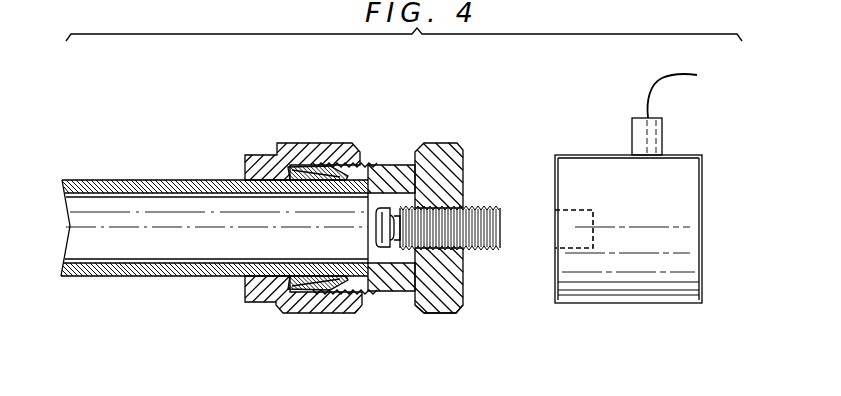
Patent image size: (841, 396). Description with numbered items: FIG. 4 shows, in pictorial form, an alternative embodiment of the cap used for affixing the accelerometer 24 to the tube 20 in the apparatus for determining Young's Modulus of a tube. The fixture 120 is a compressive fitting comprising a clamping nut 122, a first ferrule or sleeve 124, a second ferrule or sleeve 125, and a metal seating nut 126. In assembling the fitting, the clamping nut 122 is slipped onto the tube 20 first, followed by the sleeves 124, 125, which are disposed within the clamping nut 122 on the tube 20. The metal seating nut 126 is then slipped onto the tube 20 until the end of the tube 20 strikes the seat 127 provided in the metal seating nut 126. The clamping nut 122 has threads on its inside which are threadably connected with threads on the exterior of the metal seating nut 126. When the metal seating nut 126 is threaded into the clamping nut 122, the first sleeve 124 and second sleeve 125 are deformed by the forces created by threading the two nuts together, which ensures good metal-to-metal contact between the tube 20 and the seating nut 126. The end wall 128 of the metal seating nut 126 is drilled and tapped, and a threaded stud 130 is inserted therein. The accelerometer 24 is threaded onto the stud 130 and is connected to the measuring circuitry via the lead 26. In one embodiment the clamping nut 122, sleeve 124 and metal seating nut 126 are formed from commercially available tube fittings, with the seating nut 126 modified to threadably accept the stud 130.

The tube 20 is at (109, 180).
The accelerometer 24 is at (586, 155).
The lead 26 is at (670, 70).
The fixture 120 is at (432, 93).
The clamping nut 122 is at (252, 154).
The first ferrule or sleeve 124 is at (273, 315).
The second ferrule or sleeve 125 is at (305, 294).
The metal seating nut 126 is at (462, 142).
The seat 127 is at (363, 167).
The end wall 128 is at (464, 289).
The threaded stud 130 is at (485, 207).